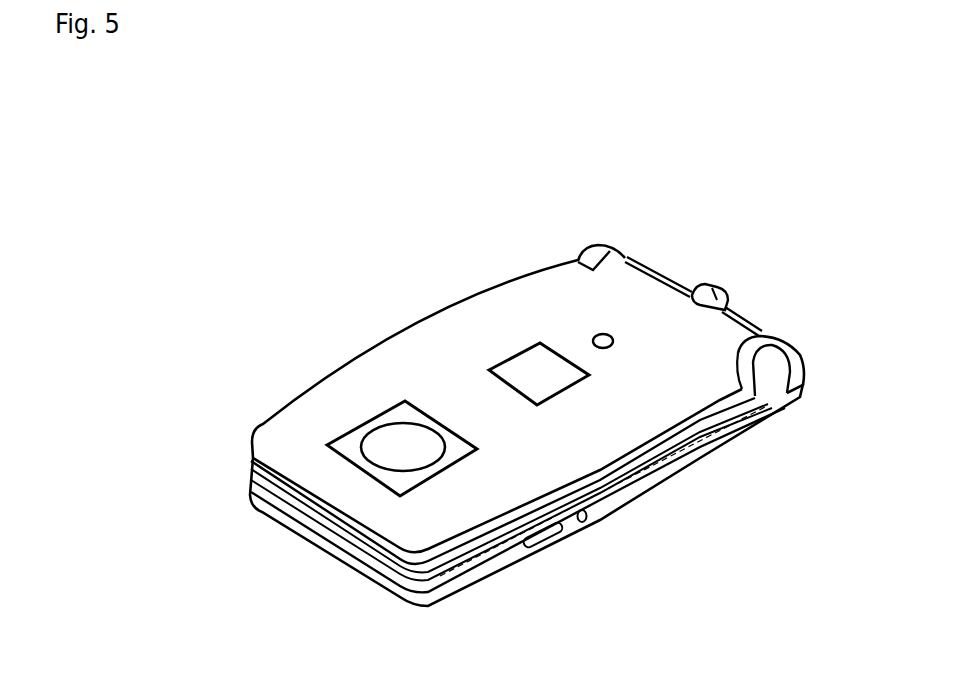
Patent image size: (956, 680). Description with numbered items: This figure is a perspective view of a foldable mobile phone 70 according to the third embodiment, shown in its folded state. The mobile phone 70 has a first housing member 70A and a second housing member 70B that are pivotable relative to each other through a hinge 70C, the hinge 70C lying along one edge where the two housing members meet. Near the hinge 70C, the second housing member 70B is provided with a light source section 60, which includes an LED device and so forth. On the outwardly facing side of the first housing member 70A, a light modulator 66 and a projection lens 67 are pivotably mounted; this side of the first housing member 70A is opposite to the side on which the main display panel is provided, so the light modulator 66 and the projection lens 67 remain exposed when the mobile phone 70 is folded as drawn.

The mobile phone 70 is at (787, 171).
The first housing member 70A is at (528, 298).
The second housing member 70B is at (672, 472).
The hinge 70C is at (600, 252).
The light source section 60 is at (721, 290).
The light modulator 66 is at (524, 366).
The projection lens 67 is at (402, 414).